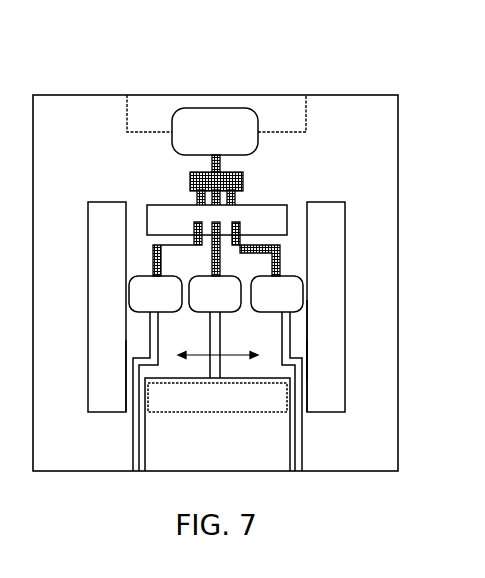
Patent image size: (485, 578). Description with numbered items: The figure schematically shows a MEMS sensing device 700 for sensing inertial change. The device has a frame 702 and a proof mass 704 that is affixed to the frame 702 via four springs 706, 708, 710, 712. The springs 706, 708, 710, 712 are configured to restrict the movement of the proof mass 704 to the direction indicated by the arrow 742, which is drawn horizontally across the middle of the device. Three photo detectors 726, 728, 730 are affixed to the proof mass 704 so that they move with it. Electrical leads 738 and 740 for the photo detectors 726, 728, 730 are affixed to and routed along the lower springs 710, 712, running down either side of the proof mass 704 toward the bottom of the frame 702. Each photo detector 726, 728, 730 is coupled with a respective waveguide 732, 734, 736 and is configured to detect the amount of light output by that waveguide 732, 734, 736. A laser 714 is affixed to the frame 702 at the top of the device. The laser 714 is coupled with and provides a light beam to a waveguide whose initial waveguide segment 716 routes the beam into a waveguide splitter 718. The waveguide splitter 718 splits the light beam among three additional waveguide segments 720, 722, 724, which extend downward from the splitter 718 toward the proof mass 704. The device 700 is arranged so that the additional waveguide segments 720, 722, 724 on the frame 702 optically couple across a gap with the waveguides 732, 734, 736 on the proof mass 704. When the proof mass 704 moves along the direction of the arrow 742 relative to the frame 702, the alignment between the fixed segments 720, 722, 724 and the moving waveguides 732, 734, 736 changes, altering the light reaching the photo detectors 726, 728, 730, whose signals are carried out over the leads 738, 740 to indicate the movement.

The MEMS sensing device 700 is at (219, 46).
The frame 702 is at (92, 94).
The proof mass 704 is at (307, 342).
The spring 706 is at (126, 220).
The spring 708 is at (307, 220).
The spring 710 is at (126, 395).
The spring 712 is at (307, 395).
The laser 714 is at (173, 143).
The initial waveguide segment 716 is at (210, 164).
The waveguide splitter 718 is at (245, 172).
The additional waveguide segment 720 is at (195, 193).
The additional waveguide segment 722 is at (210, 208).
The additional waveguide segment 724 is at (236, 195).
The photo detector 726 is at (303, 278).
The photo detector 728 is at (239, 309).
The photo detector 730 is at (130, 278).
The waveguide 732 is at (280, 251).
The waveguide 734 is at (221, 257).
The waveguide 736 is at (153, 249).
The electrical lead 738 is at (302, 448).
The electrical lead 740 is at (133, 448).
The arrow 742 is at (232, 357).